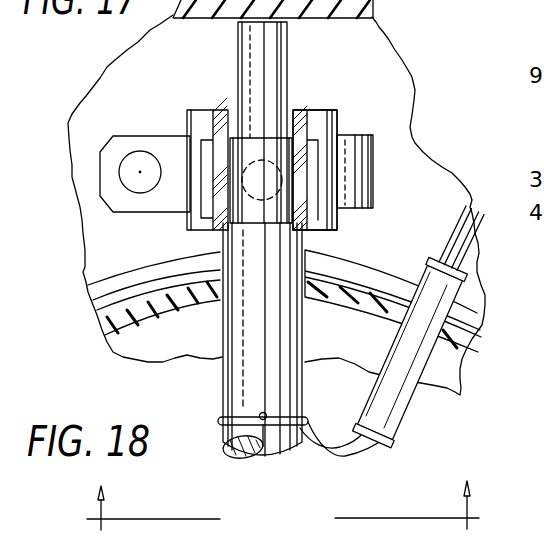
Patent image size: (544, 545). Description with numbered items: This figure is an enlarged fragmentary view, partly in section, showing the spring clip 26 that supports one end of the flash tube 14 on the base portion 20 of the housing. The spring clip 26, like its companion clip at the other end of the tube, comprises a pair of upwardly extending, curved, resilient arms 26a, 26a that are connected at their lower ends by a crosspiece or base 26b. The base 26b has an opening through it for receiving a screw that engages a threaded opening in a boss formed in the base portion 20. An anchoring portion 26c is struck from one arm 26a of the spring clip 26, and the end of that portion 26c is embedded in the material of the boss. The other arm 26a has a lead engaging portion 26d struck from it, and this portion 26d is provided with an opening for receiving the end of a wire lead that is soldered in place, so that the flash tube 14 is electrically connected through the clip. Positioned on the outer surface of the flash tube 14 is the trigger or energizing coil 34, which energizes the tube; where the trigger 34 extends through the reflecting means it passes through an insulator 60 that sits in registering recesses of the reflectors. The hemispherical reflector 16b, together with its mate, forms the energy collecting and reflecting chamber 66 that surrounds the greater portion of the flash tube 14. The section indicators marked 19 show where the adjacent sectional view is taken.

The flash tube 14 is at (303, 243).
The reflector 16b is at (464, 350).
The section line indicator 19 is at (283, 494).
The base portion 20 is at (359, 14).
The spring clip 26 is at (348, 126).
The arms 26a is at (208, 70).
The base 26b is at (142, 188).
The anchoring portion 26c is at (373, 181).
The lead engaging portion 26d is at (112, 136).
The trigger coil 34 is at (220, 421).
The insulator 60 is at (400, 420).
The energy collecting and reflecting chamber 66 is at (351, 340).